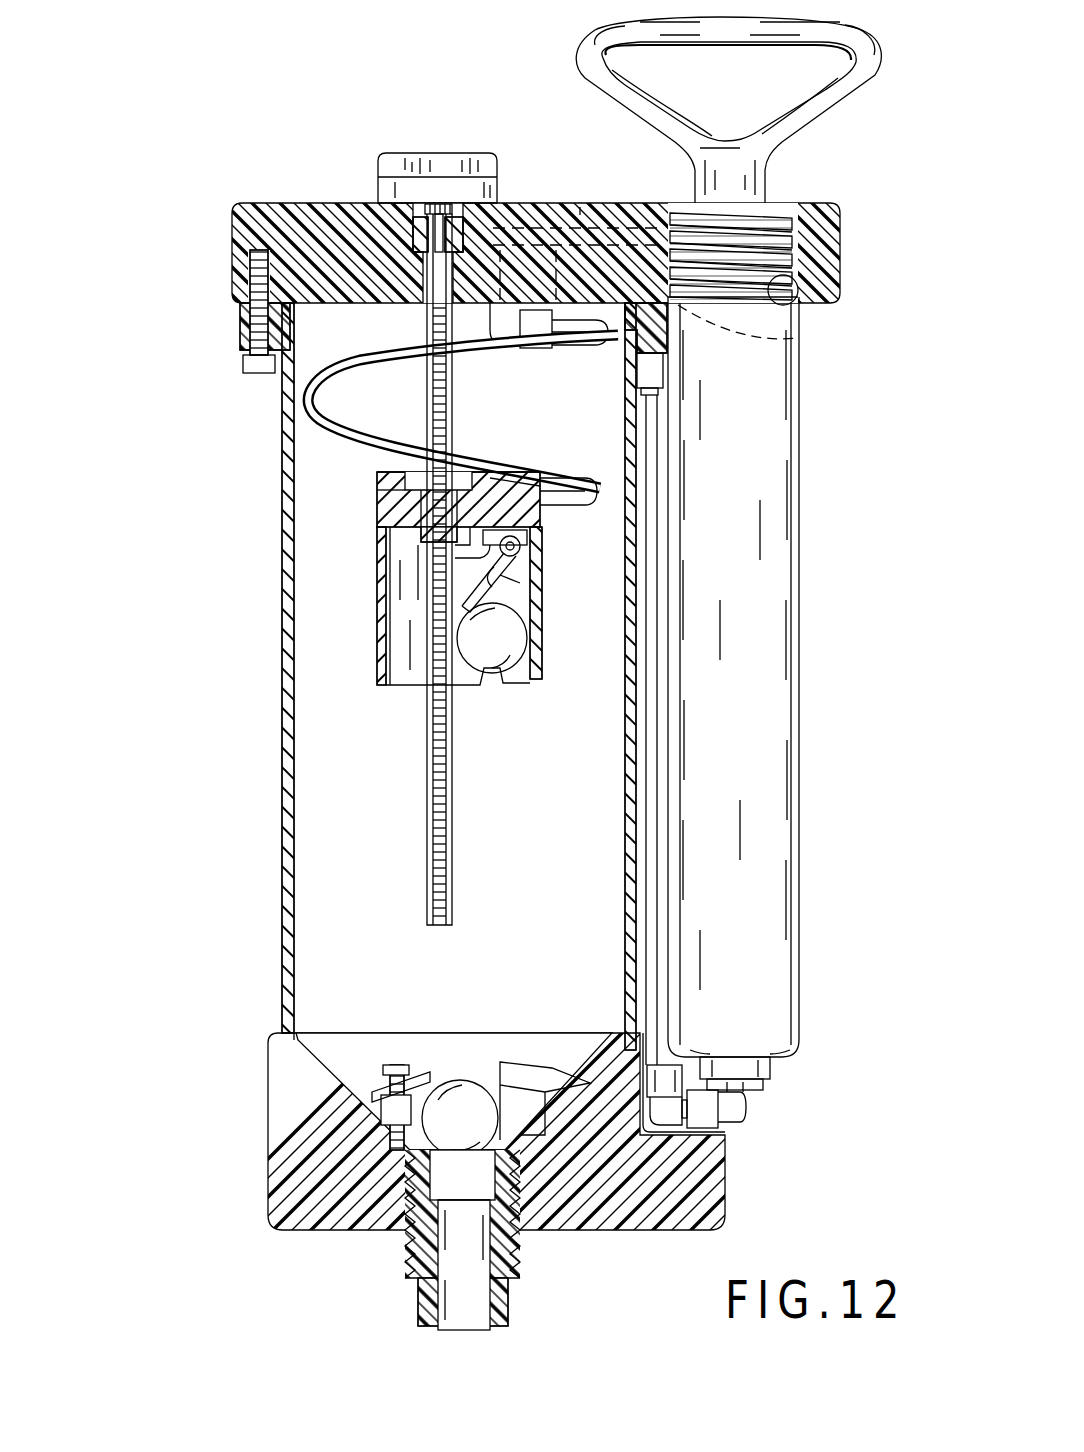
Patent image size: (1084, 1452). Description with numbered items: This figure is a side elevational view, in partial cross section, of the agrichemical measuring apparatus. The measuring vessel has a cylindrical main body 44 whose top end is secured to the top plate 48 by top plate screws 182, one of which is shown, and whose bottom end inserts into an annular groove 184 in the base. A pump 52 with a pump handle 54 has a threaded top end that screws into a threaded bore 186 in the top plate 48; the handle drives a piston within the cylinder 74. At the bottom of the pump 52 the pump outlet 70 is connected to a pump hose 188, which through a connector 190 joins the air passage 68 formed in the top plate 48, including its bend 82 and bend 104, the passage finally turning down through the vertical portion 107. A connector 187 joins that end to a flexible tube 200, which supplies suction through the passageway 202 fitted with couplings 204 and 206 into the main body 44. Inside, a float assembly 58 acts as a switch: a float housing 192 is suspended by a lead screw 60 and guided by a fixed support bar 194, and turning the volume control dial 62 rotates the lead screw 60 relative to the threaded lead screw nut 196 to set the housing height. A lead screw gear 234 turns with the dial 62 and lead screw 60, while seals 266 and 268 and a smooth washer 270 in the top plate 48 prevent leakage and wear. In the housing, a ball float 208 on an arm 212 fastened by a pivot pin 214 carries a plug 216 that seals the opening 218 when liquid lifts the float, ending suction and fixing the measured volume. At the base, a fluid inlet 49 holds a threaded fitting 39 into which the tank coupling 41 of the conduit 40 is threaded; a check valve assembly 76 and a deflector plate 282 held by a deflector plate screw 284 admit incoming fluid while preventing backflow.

The fitting 39 is at (405, 1264).
The conduit 40 is at (551, 1161).
The coupling 41 is at (425, 1310).
The cylindrical main body 44 is at (283, 805).
The top plate 48 is at (258, 205).
The fluid inlet 49 is at (466, 1300).
The pump 52 is at (769, 677).
The pump handle 54 is at (592, 40).
The float assembly 58 is at (411, 572).
The lead screw 60 is at (434, 777).
The volume control dial 62 is at (450, 153).
The air passage 68 is at (585, 205).
The pump outlet 70 is at (750, 1108).
The cylinder 74 is at (800, 515).
The check valve assembly 76 is at (345, 1232).
The bend 82 is at (760, 338).
The bend 104 is at (520, 250).
The vertical portion 107 is at (565, 335).
The top plate screw 182 is at (250, 262).
The annular groove 184 is at (270, 1062).
The threaded bore 186 is at (798, 315).
The connector 187 is at (535, 348).
The pump hose 188 is at (655, 500).
The connector 190 is at (655, 372).
The float housing 192 is at (385, 636).
The support bar 194 is at (397, 569).
The lead screw nut 196 is at (390, 480).
The flexible tube 200 is at (310, 403).
The passageway 202 is at (500, 480).
The coupling 204 is at (548, 522).
The coupling 206 is at (530, 487).
The ball float 208 is at (495, 650).
The arm 212 is at (510, 580).
The pivot pin 214 is at (522, 547).
The plug 216 is at (538, 605).
The opening 218 is at (410, 560).
The lead screw gear 234 is at (430, 204).
The seal 266 is at (415, 218).
The seal 268 is at (428, 238).
The washer 270 is at (457, 218).
The deflector plate 282 is at (456, 1078).
The deflector plate screw 284 is at (396, 1066).